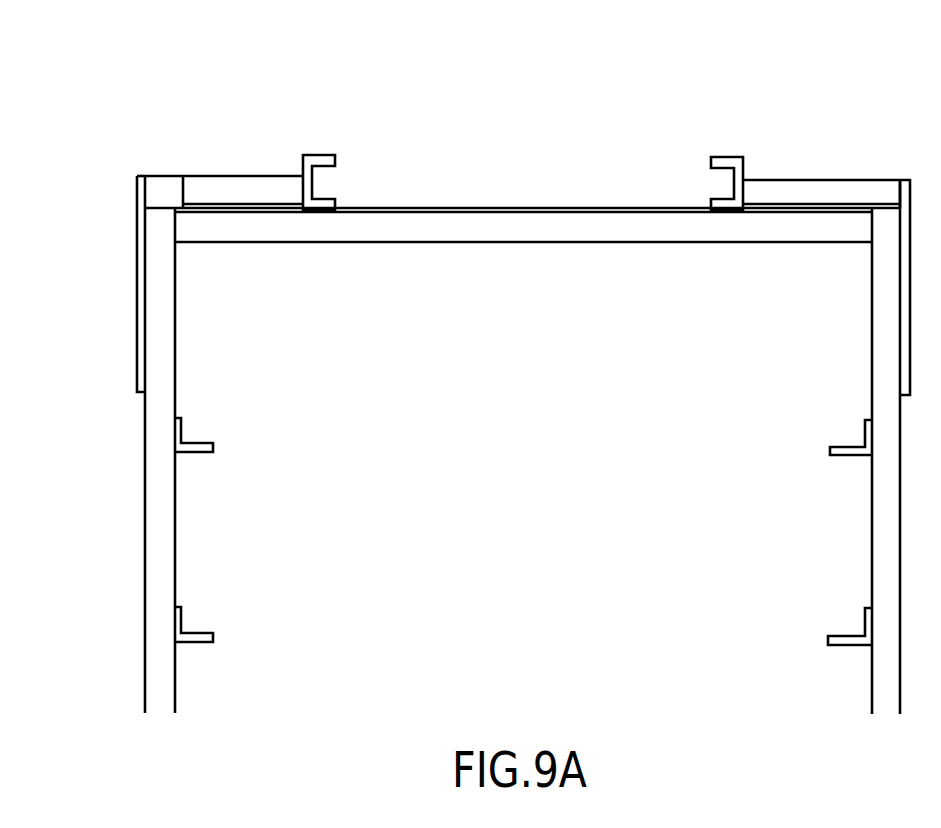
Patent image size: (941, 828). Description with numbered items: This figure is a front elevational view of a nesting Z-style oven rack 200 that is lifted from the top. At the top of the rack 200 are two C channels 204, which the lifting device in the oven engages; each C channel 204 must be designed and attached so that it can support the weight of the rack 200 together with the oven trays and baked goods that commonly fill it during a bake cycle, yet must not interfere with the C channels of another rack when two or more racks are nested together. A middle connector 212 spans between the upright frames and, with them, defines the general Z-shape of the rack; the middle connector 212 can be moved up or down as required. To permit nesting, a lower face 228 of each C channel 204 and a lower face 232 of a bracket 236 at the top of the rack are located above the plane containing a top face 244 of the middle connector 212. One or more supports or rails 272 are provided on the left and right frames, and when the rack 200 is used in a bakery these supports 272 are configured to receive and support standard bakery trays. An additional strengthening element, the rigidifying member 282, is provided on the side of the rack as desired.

The oven rack 200 is at (140, 109).
The C channel 204 is at (322, 154).
The middle connector 212 is at (538, 243).
The lower face of channel 228 is at (313, 212).
The lower face of bracket 232 is at (763, 215).
The bracket 236 is at (808, 180).
The top face of middle connector 244 is at (516, 212).
The supports or rails 272 is at (196, 443).
The rigidifying member 282 is at (137, 298).